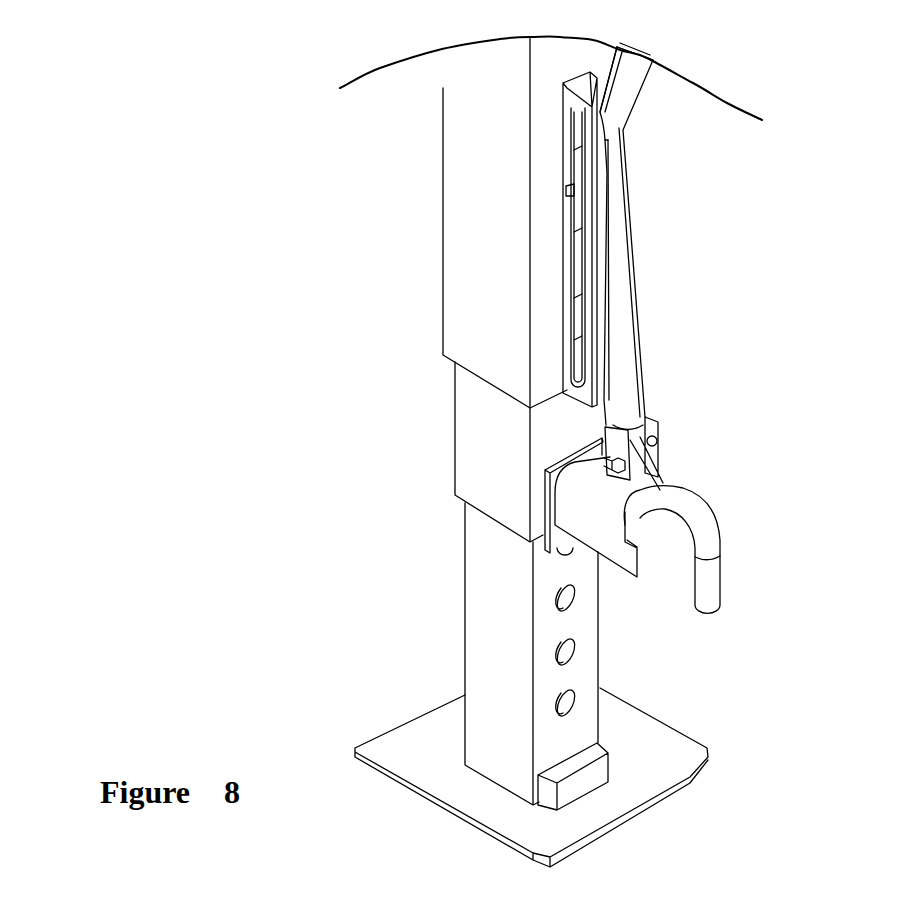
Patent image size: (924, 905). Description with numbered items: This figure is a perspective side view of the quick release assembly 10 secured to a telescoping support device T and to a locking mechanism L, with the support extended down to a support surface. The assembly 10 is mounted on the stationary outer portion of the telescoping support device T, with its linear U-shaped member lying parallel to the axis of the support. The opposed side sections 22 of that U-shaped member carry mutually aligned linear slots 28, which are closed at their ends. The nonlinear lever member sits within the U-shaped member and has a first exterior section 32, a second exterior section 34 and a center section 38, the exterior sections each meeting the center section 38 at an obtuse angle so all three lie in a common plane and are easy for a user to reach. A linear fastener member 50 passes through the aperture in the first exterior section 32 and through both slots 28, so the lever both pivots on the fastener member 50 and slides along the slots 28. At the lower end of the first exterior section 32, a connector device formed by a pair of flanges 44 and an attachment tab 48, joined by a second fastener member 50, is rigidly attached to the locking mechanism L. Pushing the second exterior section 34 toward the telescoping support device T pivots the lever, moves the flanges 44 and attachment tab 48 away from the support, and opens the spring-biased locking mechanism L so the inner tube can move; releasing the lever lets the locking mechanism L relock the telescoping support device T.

The quick release assembly 10 is at (724, 242).
The opposed side sections 22 is at (568, 114).
The linear slots 28 is at (570, 284).
The first exterior section 32 is at (607, 310).
The second exterior section 34 is at (647, 58).
The center section 38 is at (610, 117).
The flanges 44 is at (628, 430).
The attachment tab 48 is at (665, 473).
The linear fastener member 50 is at (568, 193).
The telescoping support device T is at (437, 462).
The locking mechanism L is at (624, 587).